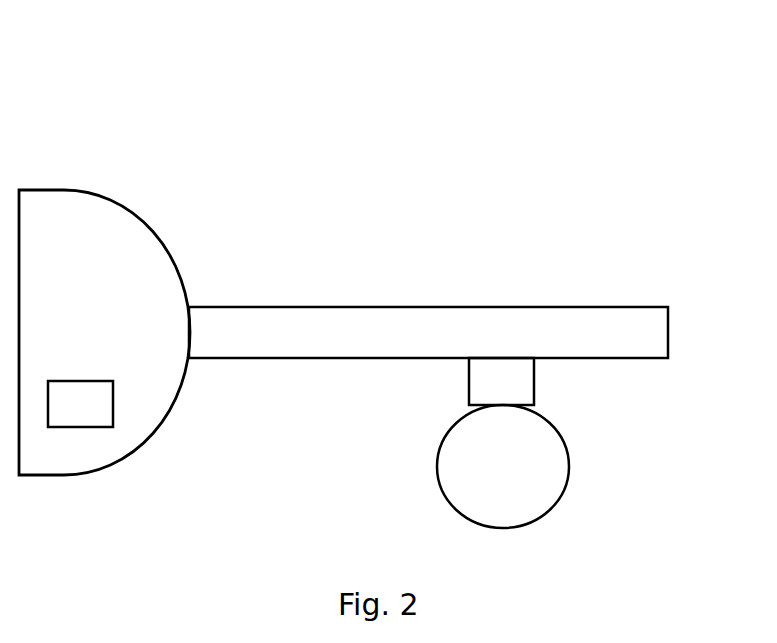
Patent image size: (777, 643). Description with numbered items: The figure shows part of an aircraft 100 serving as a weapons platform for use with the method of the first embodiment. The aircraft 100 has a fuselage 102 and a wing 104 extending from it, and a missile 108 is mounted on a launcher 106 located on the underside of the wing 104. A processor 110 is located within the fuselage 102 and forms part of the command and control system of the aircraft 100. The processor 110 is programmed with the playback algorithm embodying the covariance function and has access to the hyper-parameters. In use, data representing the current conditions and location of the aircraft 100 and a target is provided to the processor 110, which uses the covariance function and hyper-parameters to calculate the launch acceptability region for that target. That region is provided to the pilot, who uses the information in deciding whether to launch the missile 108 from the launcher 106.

The aircraft 100 is at (247, 118).
The fuselage 102 is at (119, 271).
The wing 104 is at (402, 322).
The launcher 106 is at (503, 386).
The missile 108 is at (515, 483).
The processor 110 is at (84, 407).